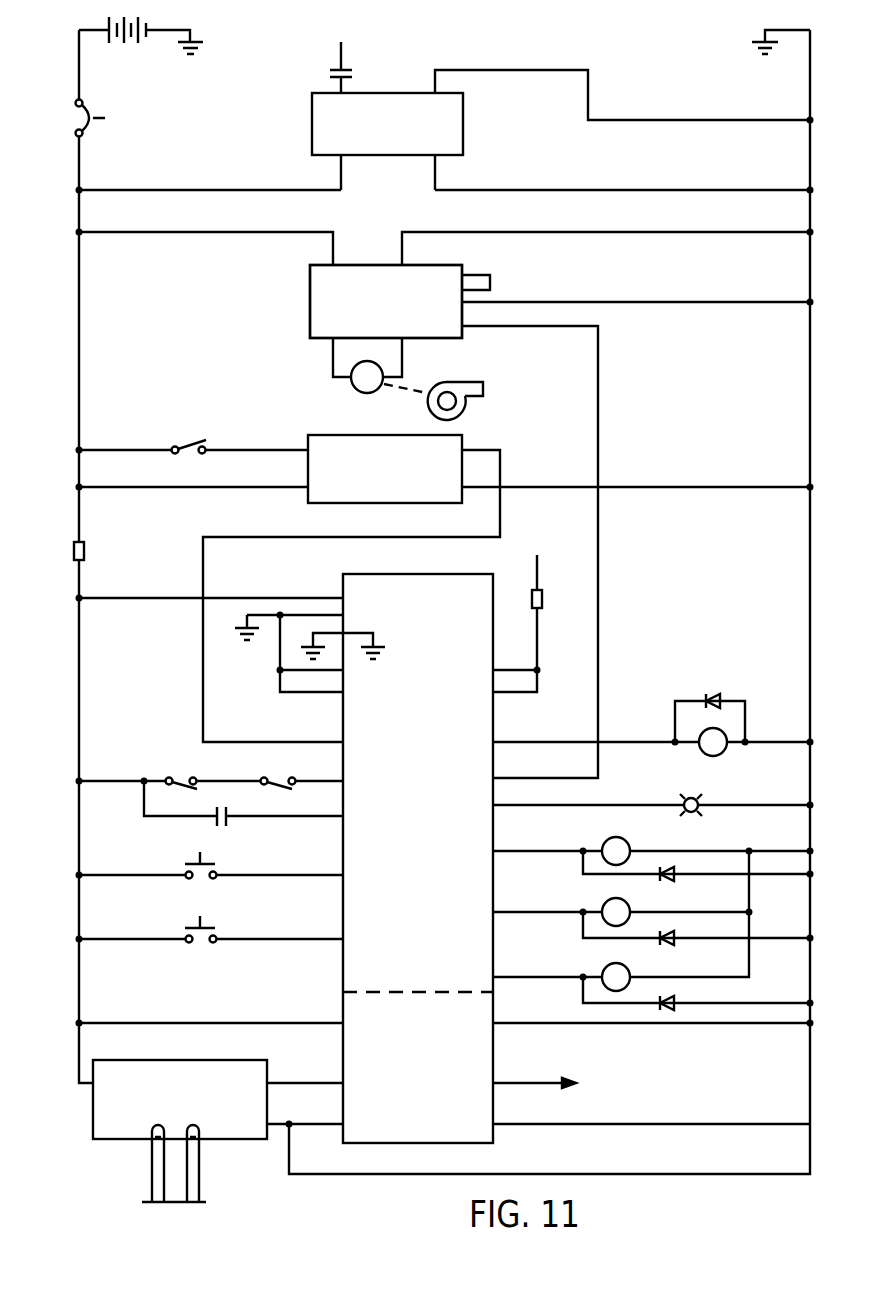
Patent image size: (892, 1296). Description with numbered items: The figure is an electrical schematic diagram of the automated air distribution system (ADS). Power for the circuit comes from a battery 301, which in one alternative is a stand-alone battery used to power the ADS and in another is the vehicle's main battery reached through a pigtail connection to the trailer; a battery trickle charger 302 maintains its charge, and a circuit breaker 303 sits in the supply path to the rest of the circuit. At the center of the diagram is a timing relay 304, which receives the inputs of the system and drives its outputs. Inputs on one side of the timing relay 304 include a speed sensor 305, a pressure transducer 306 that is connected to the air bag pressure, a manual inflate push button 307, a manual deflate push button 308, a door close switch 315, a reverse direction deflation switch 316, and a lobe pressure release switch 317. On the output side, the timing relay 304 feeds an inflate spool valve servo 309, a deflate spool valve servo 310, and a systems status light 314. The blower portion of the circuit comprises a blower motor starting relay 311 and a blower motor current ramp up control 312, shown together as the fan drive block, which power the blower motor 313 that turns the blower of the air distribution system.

The battery 301 is at (128, 45).
The battery trickle charger 302 is at (457, 128).
The circuit breaker 303 is at (93, 127).
The timing relay 304 is at (353, 587).
The speed sensor 305 is at (462, 438).
The pressure transducer 306 is at (223, 1063).
The manual inflate push button 307 is at (203, 880).
The manual deflate push button 308 is at (203, 944).
The inflate spool valve servo 309 is at (607, 840).
The deflate spool valve servo 310 is at (604, 902).
The blower motor starting relay 311 is at (317, 300).
The blower motor current ramp up control 312 is at (335, 301).
The blower motor 313 is at (353, 387).
The systems status light 314 is at (702, 798).
The door close switch 315 is at (188, 762).
The reverse direction deflation switch 316 is at (230, 823).
The lobe pressure release switch 317 is at (604, 968).